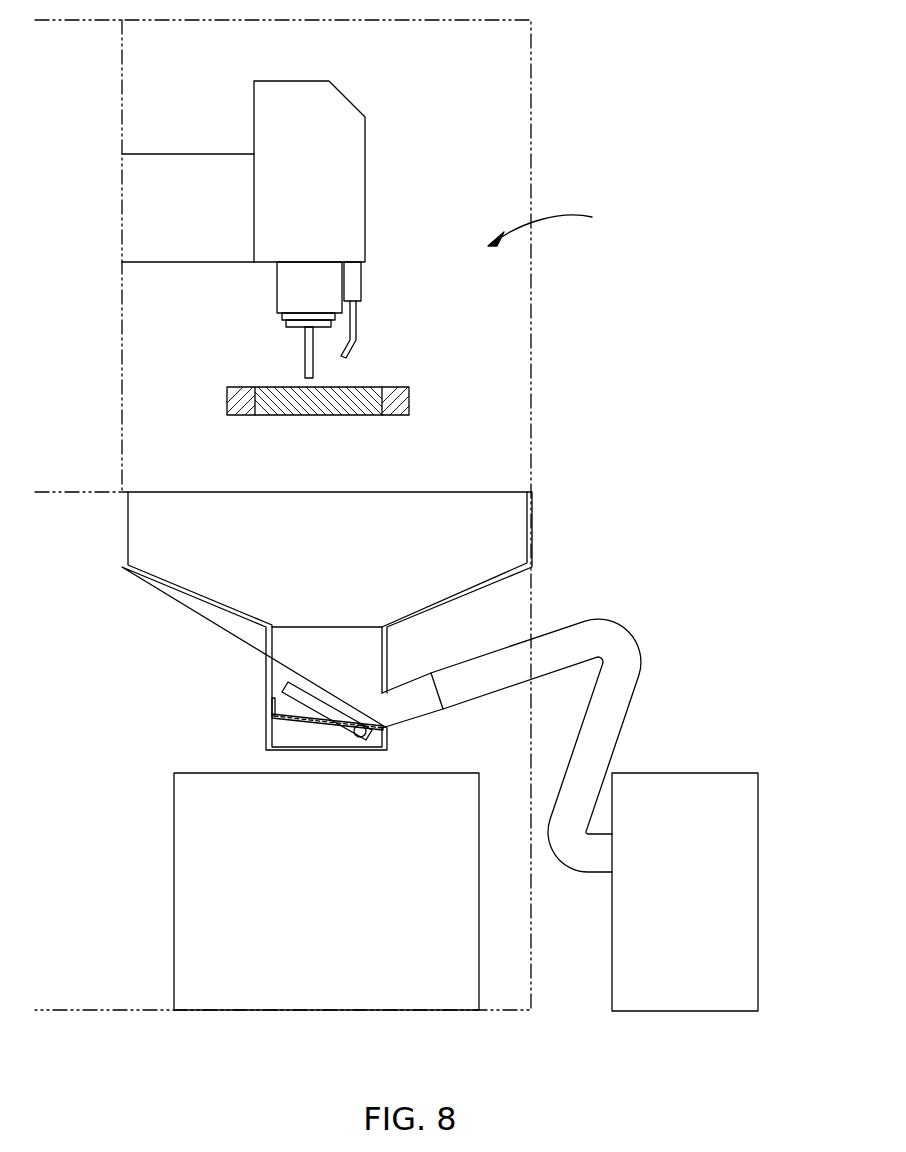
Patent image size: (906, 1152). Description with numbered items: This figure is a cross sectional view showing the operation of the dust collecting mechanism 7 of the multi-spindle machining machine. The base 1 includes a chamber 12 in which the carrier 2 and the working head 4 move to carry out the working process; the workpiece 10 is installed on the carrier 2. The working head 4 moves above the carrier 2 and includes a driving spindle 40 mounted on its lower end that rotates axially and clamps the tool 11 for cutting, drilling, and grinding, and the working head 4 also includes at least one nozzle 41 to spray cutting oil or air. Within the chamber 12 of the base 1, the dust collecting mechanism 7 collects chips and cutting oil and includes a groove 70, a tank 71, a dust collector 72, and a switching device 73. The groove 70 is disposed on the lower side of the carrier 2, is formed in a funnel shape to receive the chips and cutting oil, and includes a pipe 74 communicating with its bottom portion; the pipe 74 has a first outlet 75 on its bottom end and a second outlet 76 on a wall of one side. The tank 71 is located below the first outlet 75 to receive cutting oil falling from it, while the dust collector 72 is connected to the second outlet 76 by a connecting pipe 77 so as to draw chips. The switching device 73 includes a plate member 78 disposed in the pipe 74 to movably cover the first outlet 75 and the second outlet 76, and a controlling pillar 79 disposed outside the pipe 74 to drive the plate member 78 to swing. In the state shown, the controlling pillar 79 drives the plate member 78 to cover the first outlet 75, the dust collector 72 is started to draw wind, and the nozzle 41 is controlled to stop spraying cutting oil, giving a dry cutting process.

The base 1 is at (107, 992).
The carrier 2 is at (343, 431).
The working head 4 is at (355, 183).
The dust collecting mechanism 7 is at (425, 751).
The workpiece 10 is at (300, 410).
The tool 11 is at (308, 357).
The chamber 12 is at (554, 228).
The driving spindle 40 is at (287, 289).
The nozzle 41 is at (356, 329).
The groove 70 is at (527, 532).
The tank 71 is at (189, 876).
The dust collector 72 is at (627, 948).
The switching device 73 is at (250, 710).
The pipe 74 is at (387, 655).
The first outlet 75 is at (315, 742).
The second outlet 76 is at (383, 706).
The connecting pipe 77 is at (617, 702).
The plate member 78 is at (295, 716).
The controlling pillar 79 is at (290, 695).